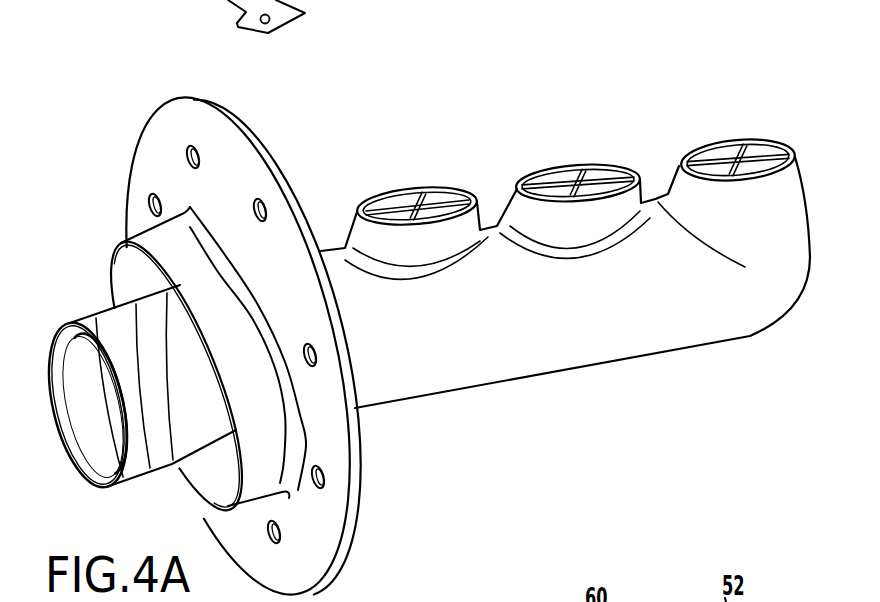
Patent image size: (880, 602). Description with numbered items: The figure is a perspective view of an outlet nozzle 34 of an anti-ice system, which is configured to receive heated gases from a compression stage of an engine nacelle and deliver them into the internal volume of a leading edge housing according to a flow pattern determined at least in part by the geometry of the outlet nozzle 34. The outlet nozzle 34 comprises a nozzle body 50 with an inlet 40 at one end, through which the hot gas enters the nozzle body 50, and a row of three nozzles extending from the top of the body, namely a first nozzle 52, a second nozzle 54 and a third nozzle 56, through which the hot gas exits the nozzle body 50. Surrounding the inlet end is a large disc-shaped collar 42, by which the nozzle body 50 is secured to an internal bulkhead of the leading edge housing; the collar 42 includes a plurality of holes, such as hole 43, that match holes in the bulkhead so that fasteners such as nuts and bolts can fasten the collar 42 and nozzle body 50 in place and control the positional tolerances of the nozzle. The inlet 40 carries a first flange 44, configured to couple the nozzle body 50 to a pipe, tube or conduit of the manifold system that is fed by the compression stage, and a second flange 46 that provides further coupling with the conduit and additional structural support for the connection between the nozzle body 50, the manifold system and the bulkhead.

The outlet nozzle 34 is at (666, 80).
The inlet 40 is at (81, 466).
The collar 42 is at (168, 107).
The hole 43 is at (192, 148).
The first flange 44 is at (80, 325).
The second flange 46 is at (119, 258).
The nozzle body 50 is at (540, 343).
The first nozzle 52 is at (433, 188).
The second nozzle 54 is at (558, 177).
The third nozzle 56 is at (778, 141).